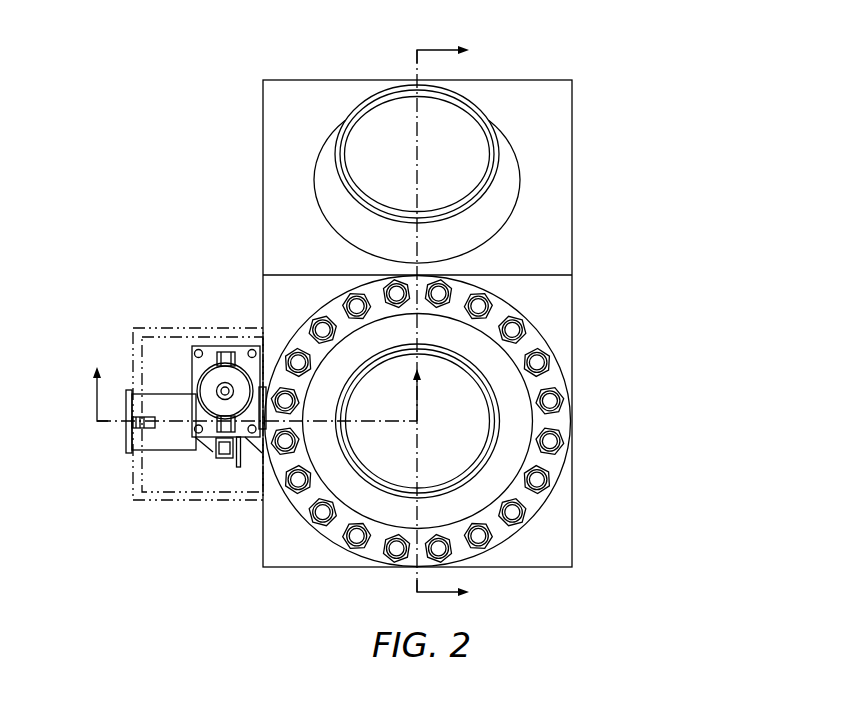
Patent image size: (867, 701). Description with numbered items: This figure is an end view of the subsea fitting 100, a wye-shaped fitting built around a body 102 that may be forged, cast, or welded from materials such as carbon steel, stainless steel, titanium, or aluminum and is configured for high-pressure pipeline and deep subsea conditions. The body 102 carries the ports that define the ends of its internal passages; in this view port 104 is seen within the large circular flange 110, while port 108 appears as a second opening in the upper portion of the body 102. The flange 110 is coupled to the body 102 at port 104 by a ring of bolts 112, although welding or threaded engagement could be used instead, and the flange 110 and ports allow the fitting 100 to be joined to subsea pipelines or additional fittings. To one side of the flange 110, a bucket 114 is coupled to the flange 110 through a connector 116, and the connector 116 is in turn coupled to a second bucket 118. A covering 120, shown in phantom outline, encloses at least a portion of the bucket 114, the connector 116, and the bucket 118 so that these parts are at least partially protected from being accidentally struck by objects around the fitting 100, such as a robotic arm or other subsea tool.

The subsea fitting 100 is at (242, 56).
The body 102 is at (559, 111).
The port 104 is at (500, 415).
The port 108 is at (377, 95).
The flange 110 is at (542, 507).
The bolts 112 is at (542, 363).
The bucket 114 is at (165, 452).
The connector 116 is at (233, 460).
The bucket 118 is at (210, 345).
The covering 120 is at (132, 355).